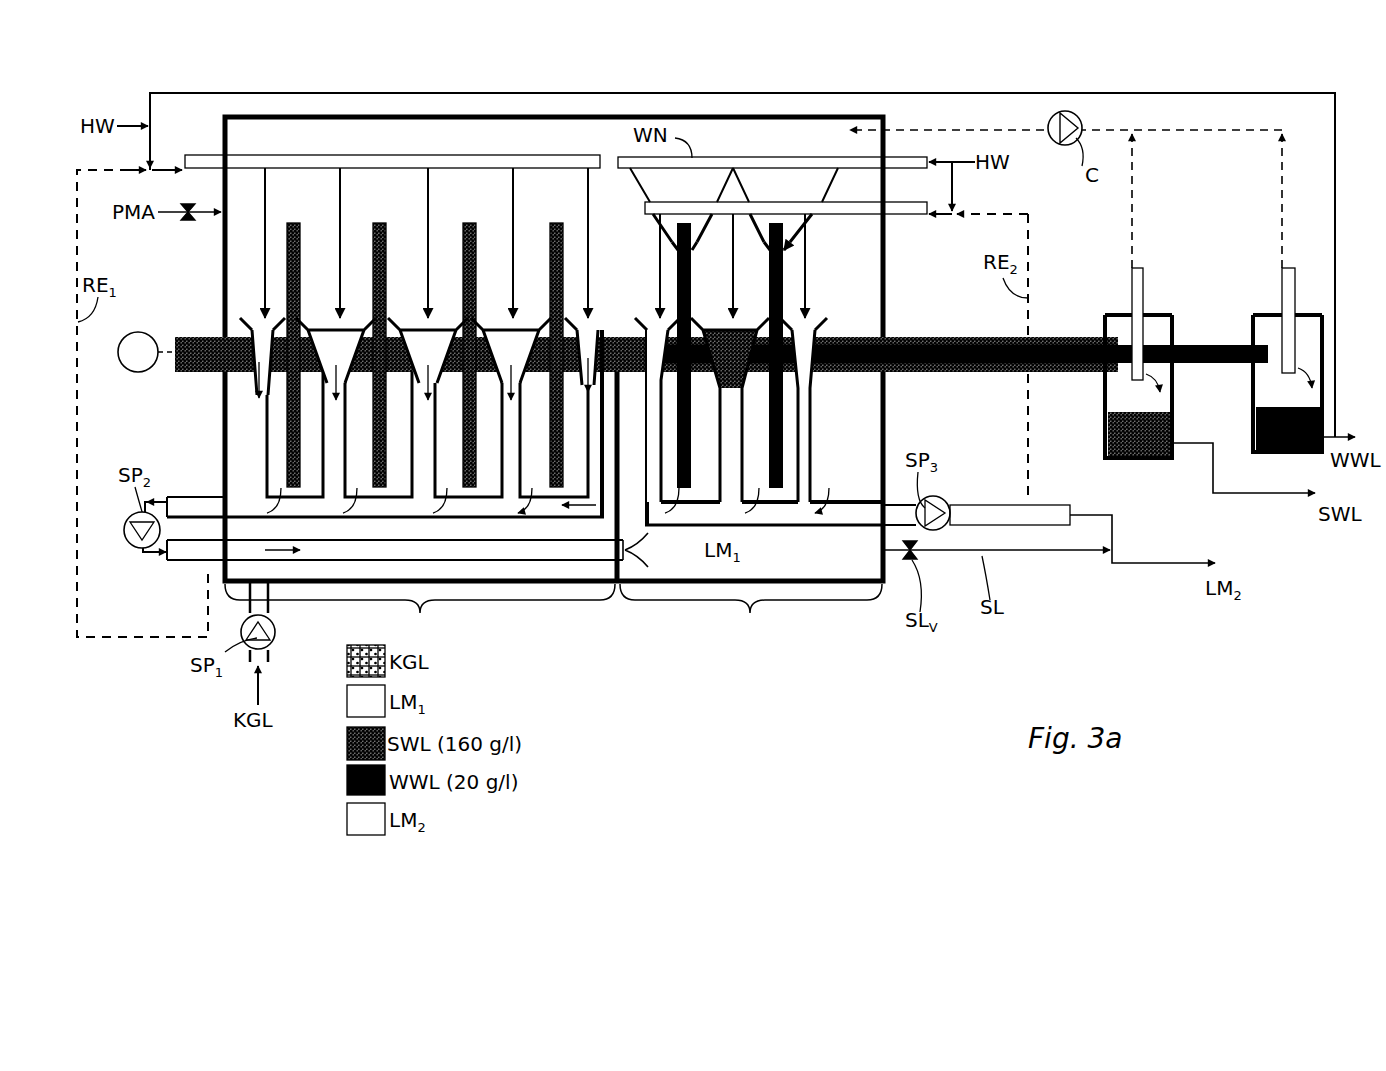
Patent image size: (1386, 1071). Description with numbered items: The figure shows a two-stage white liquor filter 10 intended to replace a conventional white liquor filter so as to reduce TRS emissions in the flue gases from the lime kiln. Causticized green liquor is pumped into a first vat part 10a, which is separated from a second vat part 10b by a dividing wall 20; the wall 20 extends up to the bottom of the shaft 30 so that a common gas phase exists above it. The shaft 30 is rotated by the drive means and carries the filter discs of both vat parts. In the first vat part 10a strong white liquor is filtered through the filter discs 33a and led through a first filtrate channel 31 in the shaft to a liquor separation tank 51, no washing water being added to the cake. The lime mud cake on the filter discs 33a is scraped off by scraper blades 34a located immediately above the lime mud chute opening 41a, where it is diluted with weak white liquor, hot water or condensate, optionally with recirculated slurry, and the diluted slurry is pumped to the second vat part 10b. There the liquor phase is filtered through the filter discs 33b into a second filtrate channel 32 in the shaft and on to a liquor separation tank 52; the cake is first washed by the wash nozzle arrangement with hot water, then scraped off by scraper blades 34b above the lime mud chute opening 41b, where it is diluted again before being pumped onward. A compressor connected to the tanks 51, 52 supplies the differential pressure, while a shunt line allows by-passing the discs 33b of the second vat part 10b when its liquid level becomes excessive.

The 2-stage white liquor filter 10 is at (224, 448).
The first vat part 10a is at (420, 613).
The second vat part 10b is at (751, 613).
The dividing wall 20 is at (617, 517).
The shaft 30 is at (198, 336).
The first filtrate channel 31 is at (1065, 338).
The second filtrate channel 32 is at (1058, 373).
The filter discs 33a is at (293, 222).
The filter discs 33b is at (676, 262).
The scraper blades 34a is at (364, 328).
The scraper blades 34b is at (746, 328).
The lime mud chute opening 41a is at (258, 326).
The lime mud chute opening 41b is at (652, 326).
The liquor separation tank 51 is at (1173, 316).
The liquor separation tank 52 is at (1252, 316).